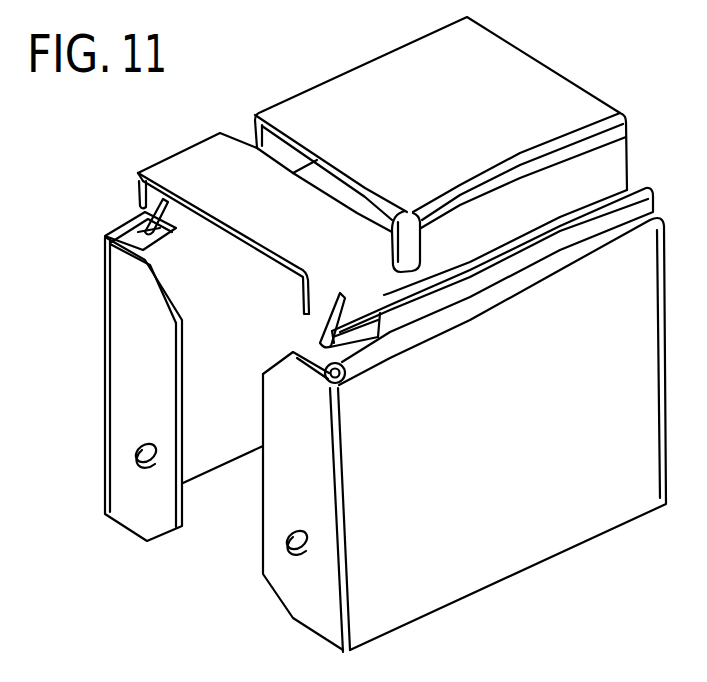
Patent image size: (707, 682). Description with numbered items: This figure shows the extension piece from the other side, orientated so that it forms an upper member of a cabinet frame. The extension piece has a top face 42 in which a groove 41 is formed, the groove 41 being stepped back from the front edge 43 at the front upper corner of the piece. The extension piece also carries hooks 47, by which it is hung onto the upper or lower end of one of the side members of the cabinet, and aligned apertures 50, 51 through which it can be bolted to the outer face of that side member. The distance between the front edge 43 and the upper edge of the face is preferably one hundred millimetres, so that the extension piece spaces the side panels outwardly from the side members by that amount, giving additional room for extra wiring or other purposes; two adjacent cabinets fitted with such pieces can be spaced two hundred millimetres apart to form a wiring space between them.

The groove 41 is at (402, 242).
The upper face 42 is at (550, 105).
The front upper corner 43 is at (213, 207).
The hooks 47 is at (140, 200).
The aperture 50 is at (287, 541).
The aperture 51 is at (136, 457).